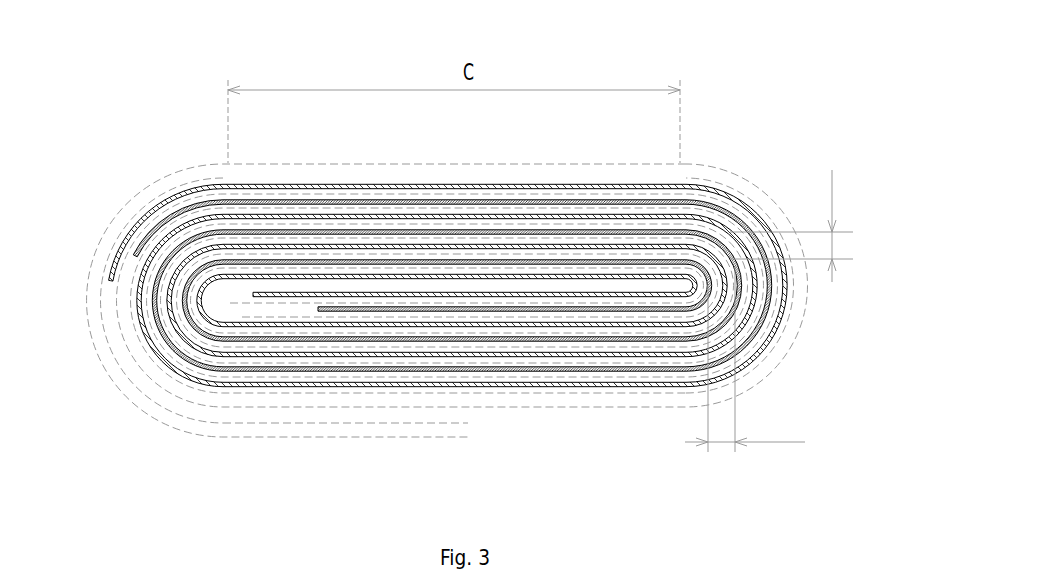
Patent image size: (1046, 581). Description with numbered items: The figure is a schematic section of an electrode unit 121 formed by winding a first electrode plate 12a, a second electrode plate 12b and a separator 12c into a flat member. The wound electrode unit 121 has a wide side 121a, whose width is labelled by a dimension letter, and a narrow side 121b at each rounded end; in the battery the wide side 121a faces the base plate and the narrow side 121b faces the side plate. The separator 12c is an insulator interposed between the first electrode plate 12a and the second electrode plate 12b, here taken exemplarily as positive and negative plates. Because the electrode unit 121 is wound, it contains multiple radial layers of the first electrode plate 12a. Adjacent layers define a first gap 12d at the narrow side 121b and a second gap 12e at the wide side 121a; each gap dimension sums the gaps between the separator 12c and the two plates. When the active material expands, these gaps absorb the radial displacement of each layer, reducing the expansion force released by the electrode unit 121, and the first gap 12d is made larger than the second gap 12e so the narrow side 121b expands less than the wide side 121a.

The electrode unit 121 is at (500, 30).
The wide side 121a is at (494, 149).
The narrow side 121b is at (64, 341).
The first electrode plate 12a is at (318, 310).
The second electrode plate 12b is at (278, 295).
The separator 12c is at (242, 317).
The first gap 12d is at (722, 447).
The second gap 12e is at (832, 243).